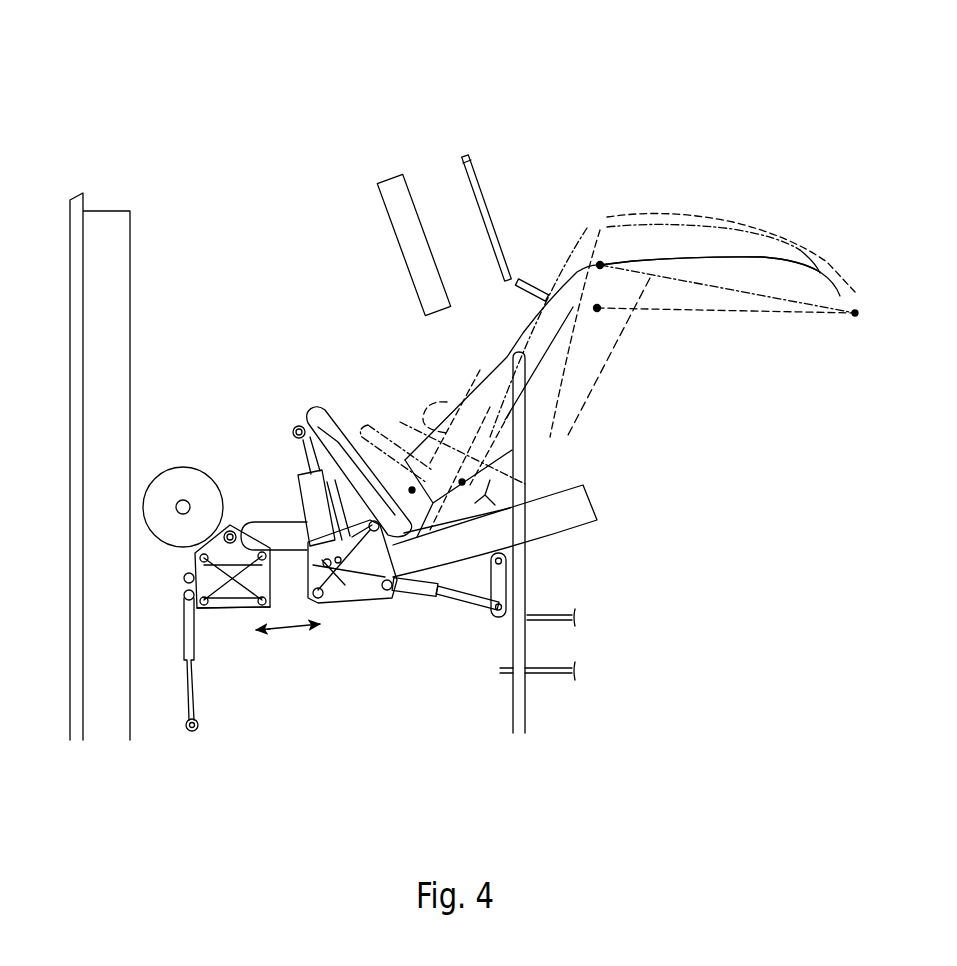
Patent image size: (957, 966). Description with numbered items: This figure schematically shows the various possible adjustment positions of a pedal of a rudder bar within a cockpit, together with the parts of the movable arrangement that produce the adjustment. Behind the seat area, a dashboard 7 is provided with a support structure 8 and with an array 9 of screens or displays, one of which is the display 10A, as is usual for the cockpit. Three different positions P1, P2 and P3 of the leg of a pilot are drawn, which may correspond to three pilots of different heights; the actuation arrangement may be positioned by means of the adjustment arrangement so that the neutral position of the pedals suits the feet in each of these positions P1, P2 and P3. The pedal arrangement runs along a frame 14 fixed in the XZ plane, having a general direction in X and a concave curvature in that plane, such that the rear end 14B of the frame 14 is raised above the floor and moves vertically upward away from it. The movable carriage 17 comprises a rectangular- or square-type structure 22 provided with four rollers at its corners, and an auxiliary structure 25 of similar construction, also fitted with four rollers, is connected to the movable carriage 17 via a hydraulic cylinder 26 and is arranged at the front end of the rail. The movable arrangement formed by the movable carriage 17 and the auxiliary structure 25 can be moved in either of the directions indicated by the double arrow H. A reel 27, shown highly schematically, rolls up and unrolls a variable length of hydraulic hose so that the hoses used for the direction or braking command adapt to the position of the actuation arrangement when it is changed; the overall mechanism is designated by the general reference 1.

The dashboard 7 is at (435, 95).
The support structure 8 is at (388, 180).
The array of screens or displays 9 is at (477, 138).
The screen or display 10A is at (475, 172).
The first position P1 is at (763, 260).
The second position P2 is at (655, 233).
The third position P3 is at (717, 223).
The frame 14 is at (577, 520).
The rear end of the frame 14B is at (586, 458).
The reel 27 is at (178, 470).
The hydraulic cylinder 26 is at (267, 521).
The auxiliary structure 25 is at (235, 620).
The movable carriage 17 is at (350, 608).
The rectangular- or square-type structure 22 is at (375, 600).
The double arrow H is at (295, 633).
The seat adjustment mechanism 1 is at (358, 714).